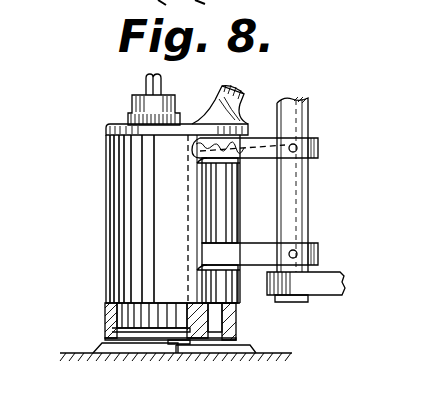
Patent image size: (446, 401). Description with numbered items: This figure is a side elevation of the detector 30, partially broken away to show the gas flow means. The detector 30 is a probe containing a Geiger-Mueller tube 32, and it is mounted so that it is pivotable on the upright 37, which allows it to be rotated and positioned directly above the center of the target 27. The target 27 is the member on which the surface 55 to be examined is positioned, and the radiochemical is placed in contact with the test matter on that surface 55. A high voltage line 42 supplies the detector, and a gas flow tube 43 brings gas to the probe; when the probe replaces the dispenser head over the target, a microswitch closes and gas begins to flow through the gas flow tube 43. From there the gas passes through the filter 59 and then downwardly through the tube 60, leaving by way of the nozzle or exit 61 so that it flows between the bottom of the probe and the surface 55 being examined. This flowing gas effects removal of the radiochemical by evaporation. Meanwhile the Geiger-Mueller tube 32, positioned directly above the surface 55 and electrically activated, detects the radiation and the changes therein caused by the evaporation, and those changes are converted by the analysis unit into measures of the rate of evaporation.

The target 27 is at (134, 353).
The detector 30 is at (98, 179).
The Geiger-Mueller tube 32 is at (136, 105).
The upright 37 is at (296, 182).
The high voltage line 42 is at (146, 86).
The gas flow tube 43 is at (238, 96).
The surface 55 is at (100, 346).
The filter 59 is at (298, 145).
The tube 60 is at (238, 201).
The nozzle 61 is at (224, 352).